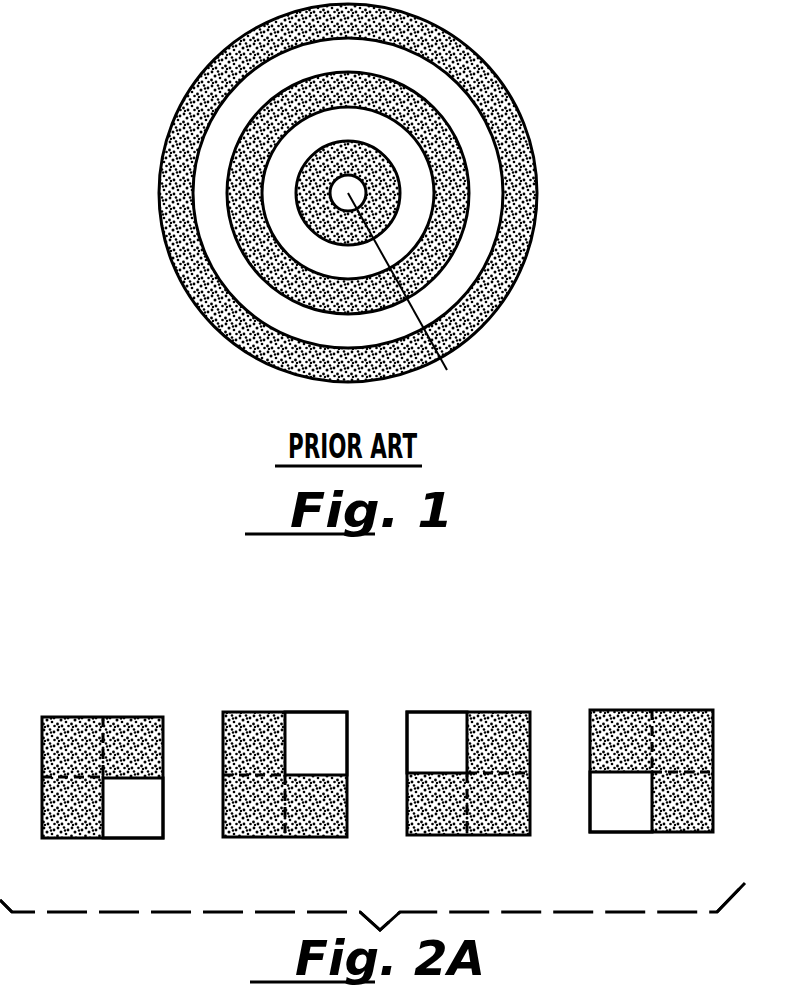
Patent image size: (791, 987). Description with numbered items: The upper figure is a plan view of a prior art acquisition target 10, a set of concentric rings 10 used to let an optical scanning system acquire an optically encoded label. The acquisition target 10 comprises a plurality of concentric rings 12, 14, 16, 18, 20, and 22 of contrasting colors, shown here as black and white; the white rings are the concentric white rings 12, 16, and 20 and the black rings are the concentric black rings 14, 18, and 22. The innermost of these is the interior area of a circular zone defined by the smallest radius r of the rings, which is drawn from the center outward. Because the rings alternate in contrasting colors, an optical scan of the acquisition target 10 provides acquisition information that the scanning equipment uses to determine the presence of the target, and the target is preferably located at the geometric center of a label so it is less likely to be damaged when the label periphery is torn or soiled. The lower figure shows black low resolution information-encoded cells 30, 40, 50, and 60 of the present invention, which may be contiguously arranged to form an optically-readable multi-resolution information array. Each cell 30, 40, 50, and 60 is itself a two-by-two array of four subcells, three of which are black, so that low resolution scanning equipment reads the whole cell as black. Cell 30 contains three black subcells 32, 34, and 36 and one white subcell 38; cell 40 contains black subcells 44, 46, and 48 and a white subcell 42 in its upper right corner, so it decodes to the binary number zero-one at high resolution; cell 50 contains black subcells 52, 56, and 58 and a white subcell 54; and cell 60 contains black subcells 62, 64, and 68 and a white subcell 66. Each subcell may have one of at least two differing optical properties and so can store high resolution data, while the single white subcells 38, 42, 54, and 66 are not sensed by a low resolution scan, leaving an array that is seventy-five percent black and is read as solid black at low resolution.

In FIG. 1, the acquisition target 10 is at (212, 37).
In FIG. 1, the concentric white ring 12 is at (322, 183).
In FIG. 1, the concentric black ring 14 is at (387, 200).
In FIG. 1, the concentric white ring 16 is at (283, 215).
In FIG. 1, the concentric black ring 18 is at (463, 173).
In FIG. 1, the concentric white ring 20 is at (230, 270).
In FIG. 1, the concentric black ring 22 is at (490, 100).
In FIG. 1, the smallest radius r is at (406, 295).
In FIG. 2A, the black low resolution information-encoded cell 30 is at (88, 766).
In FIG. 2A, the black subcell 32 is at (132, 727).
In FIG. 2A, the black subcell 34 is at (68, 727).
In FIG. 2A, the black subcell 36 is at (80, 813).
In FIG. 2A, the white subcell 38 is at (132, 813).
In FIG. 2A, the black low resolution information-encoded cell 40 is at (271, 775).
In FIG. 2A, the white subcell 42 is at (318, 728).
In FIG. 2A, the black subcell 44 is at (258, 730).
In FIG. 2A, the black subcell 46 is at (258, 817).
In FIG. 2A, the black subcell 48 is at (318, 815).
In FIG. 2A, the black low resolution information-encoded cell 50 is at (460, 764).
In FIG. 2A, the black subcell 52 is at (495, 722).
In FIG. 2A, the white subcell 54 is at (440, 728).
In FIG. 2A, the black subcell 56 is at (442, 817).
In FIG. 2A, the black subcell 58 is at (505, 817).
In FIG. 2A, the black low resolution information-encoded cell 60 is at (642, 764).
In FIG. 2A, the black subcell 62 is at (680, 725).
In FIG. 2A, the black subcell 64 is at (625, 725).
In FIG. 2A, the white subcell 66 is at (635, 813).
In FIG. 2A, the black subcell 68 is at (687, 825).